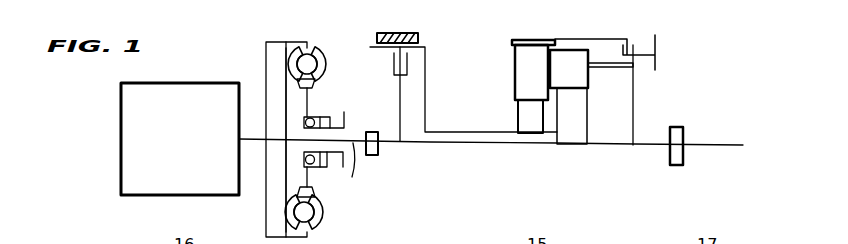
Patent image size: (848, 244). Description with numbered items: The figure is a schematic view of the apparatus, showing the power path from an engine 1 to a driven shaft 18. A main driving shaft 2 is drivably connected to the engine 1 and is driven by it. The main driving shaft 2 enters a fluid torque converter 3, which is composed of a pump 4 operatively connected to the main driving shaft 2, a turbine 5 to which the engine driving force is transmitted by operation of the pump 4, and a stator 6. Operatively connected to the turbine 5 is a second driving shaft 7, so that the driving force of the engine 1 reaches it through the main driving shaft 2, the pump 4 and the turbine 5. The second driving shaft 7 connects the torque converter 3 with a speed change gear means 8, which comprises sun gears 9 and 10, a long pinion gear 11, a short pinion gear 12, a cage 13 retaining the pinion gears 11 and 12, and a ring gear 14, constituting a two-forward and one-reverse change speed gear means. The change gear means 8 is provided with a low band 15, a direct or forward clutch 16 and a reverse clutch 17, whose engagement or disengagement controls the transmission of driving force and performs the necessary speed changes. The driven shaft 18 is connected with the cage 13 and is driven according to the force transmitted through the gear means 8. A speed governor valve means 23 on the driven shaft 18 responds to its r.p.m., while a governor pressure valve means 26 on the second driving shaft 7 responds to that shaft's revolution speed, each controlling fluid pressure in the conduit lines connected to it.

The engine 1 is at (130, 143).
The main driving shaft 2 is at (253, 140).
The fluid torque converter 3 is at (240, 49).
The pump 4 is at (320, 57).
The turbine 5 is at (286, 66).
The stator 6 is at (316, 86).
The second driving shaft 7 is at (355, 169).
The speed change gear means 8 is at (494, 36).
The sun gear 9 is at (573, 145).
The sun gear 10 is at (525, 117).
The long pinion gear 11 is at (573, 62).
The short pinion gear 12 is at (518, 75).
The cage 13 is at (610, 70).
The ring gear 14 is at (530, 40).
The low band 15 is at (402, 33).
The direct or forward clutch 16 is at (394, 65).
The reverse clutch 17 is at (636, 50).
The driven shaft 18 is at (647, 146).
The speed governor valve means 23 is at (678, 130).
The governor pressure valve means 26 is at (379, 134).